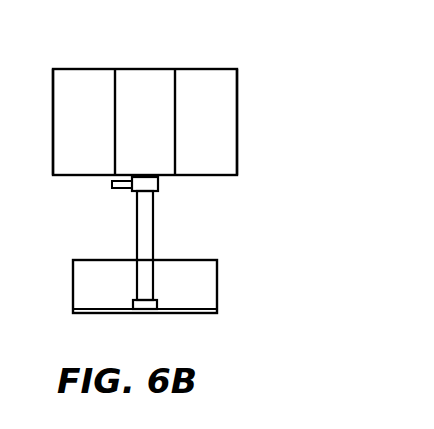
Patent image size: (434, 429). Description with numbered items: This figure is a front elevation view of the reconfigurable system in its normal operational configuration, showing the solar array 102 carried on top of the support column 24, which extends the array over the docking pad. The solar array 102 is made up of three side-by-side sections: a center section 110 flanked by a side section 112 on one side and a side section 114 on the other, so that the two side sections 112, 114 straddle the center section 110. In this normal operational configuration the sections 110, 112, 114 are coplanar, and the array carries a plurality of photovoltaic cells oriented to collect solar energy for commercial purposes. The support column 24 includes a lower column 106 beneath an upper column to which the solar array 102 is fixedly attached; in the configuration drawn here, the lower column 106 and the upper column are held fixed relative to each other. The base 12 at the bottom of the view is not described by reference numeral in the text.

The solar array 102 is at (186, 93).
The side section 112 is at (53, 63).
The center section 110 is at (115, 63).
The side section 114 is at (175, 63).
The support column 24 is at (154, 209).
The lower column 106 is at (137, 240).
The base 12 is at (217, 274).